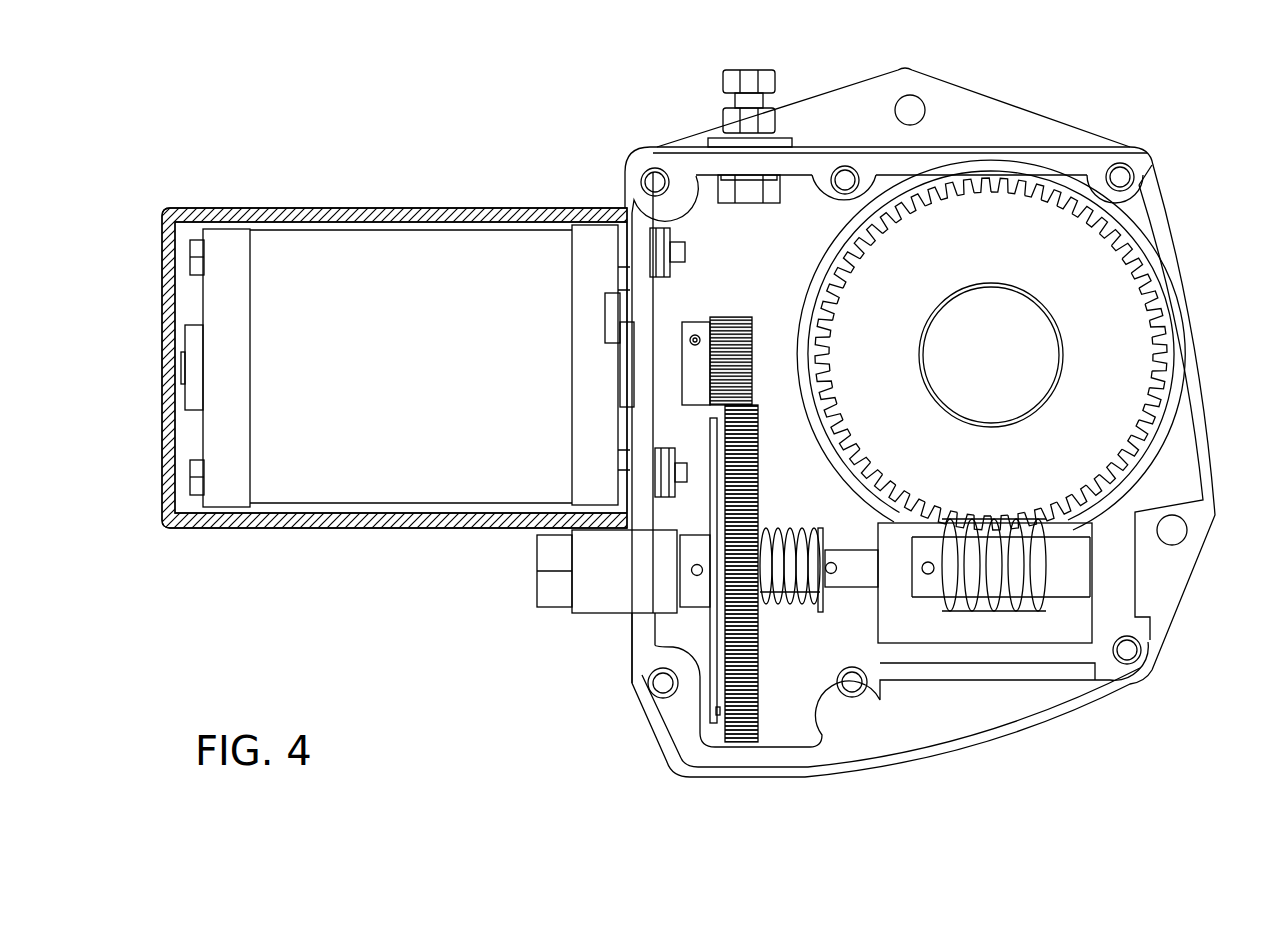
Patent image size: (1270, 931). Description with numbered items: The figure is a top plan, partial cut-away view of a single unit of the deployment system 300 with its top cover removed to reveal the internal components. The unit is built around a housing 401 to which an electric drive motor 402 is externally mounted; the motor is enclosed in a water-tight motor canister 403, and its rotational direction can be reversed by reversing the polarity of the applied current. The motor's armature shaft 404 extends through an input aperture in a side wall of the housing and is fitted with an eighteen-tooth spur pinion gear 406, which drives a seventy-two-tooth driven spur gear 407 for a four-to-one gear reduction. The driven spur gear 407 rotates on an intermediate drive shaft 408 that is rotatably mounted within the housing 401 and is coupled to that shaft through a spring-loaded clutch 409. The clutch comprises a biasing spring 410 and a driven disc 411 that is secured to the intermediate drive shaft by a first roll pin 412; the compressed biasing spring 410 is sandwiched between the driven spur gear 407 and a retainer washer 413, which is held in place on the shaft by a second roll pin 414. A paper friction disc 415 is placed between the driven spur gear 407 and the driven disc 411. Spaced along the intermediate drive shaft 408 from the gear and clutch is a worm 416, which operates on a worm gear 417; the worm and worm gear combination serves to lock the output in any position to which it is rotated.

The deployment system 300 is at (1102, 84).
The housing 401 is at (1158, 458).
The electric drive motor 402 is at (397, 273).
The motor canister 403 is at (472, 207).
The armature shaft 404 is at (667, 365).
The spur pinion gear 406 is at (726, 308).
The driven spur gear 407 is at (745, 751).
The intermediate drive shaft 408 is at (855, 563).
The spring-loaded clutch 409 is at (708, 619).
The biasing spring 410 is at (782, 592).
The driven disc 411 is at (719, 715).
The first roll pin 412 is at (694, 584).
The retainer washer 413 is at (818, 540).
The second roll pin 414 is at (840, 580).
The paper friction disc 415 is at (723, 723).
The worm 416 is at (993, 607).
The worm gear 417 is at (1140, 270).